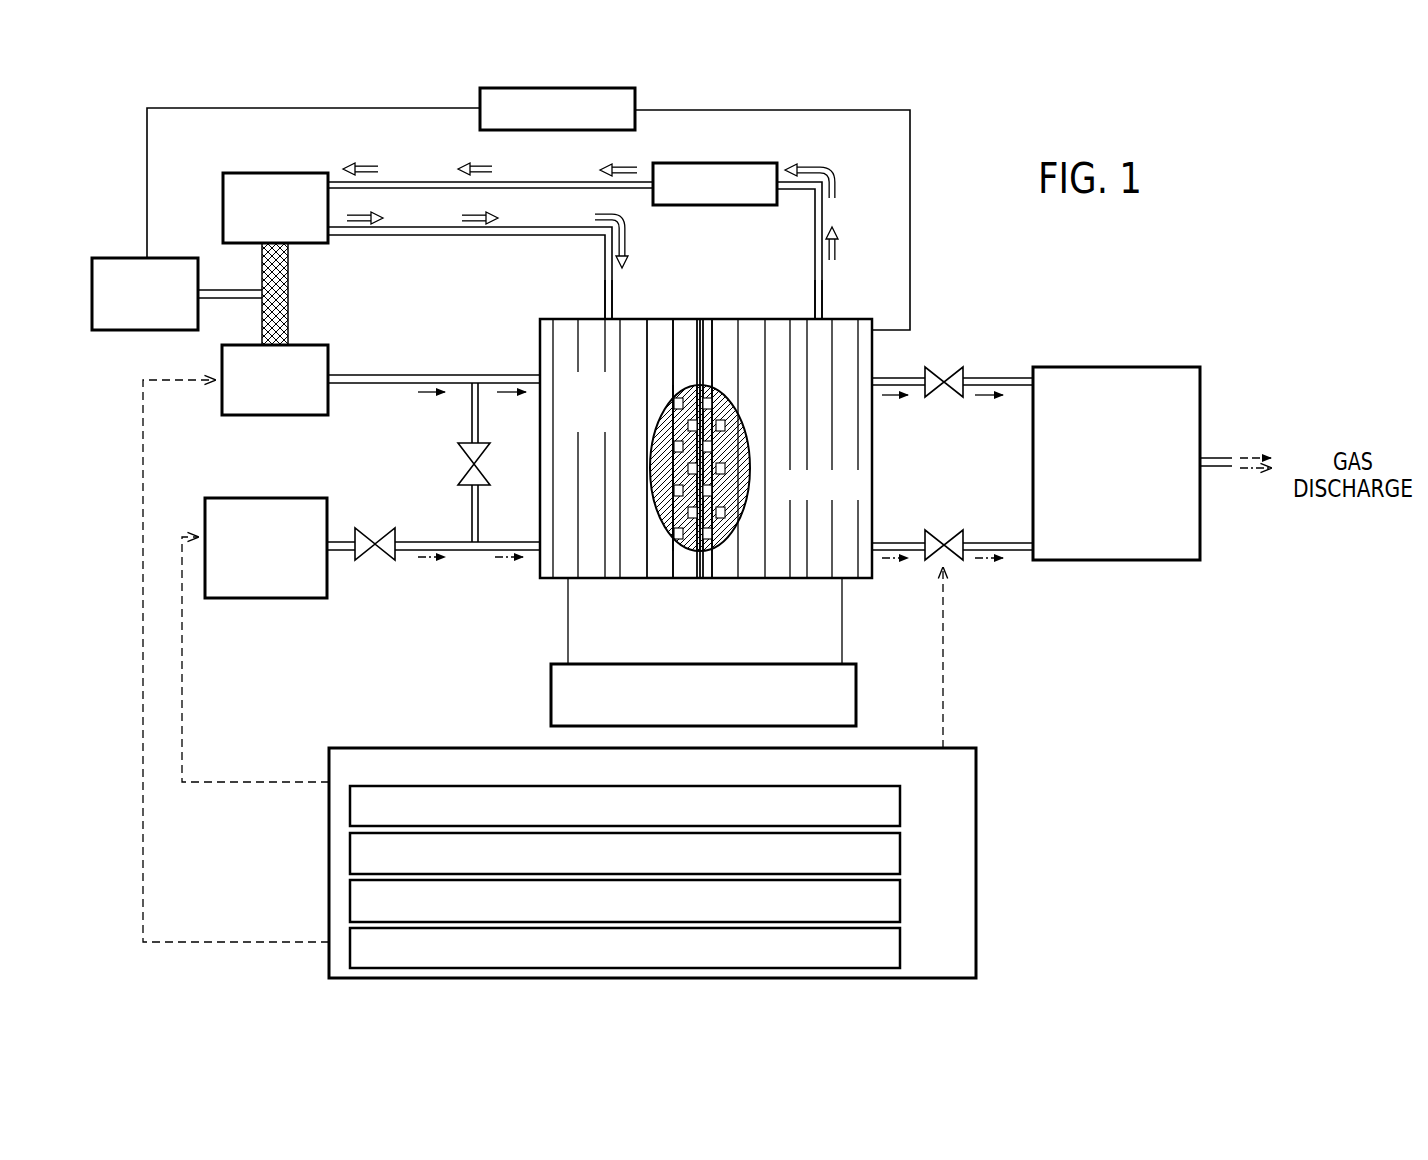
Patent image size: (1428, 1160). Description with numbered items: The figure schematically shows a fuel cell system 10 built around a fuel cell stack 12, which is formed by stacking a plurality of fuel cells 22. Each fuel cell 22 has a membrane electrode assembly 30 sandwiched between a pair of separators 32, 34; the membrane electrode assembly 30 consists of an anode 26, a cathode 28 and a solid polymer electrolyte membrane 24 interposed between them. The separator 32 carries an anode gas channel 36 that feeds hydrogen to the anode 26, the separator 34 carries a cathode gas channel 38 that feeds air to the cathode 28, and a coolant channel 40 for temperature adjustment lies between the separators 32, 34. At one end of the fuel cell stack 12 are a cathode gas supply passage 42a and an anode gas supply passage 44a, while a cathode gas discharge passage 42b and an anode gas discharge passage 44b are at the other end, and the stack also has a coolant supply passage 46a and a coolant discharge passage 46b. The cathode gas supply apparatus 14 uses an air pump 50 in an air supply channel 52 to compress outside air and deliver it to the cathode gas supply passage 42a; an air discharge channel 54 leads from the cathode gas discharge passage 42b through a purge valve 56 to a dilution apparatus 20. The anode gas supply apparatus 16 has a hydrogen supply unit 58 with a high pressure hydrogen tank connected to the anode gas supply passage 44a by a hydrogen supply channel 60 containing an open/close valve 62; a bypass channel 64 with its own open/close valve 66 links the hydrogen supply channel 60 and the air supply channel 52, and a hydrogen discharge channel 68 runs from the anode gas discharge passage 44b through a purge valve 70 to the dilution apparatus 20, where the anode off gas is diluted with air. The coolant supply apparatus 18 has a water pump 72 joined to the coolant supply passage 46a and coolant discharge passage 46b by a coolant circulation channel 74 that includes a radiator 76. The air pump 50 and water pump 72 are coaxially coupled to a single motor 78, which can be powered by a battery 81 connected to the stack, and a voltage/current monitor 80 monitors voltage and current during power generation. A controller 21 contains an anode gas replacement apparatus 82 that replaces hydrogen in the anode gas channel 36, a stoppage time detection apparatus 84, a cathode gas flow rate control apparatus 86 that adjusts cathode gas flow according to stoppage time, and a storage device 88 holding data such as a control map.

The fuel cell system 10 is at (1013, 253).
The fuel cell stack 12 is at (759, 314).
The cathode gas supply apparatus 14 is at (427, 418).
The anode gas supply apparatus 16 is at (364, 539).
The coolant supply apparatus 18 is at (580, 221).
The dilution apparatus 20 is at (1189, 366).
The controller 21 is at (586, 679).
The fuel cell 22 is at (704, 492).
The solid polymer electrolyte membrane 24 is at (701, 385).
The anode 26 is at (684, 388).
The cathode 28 is at (727, 380).
The membrane electrode assembly 30 is at (701, 582).
The separator 32 is at (681, 582).
The separator 34 is at (728, 473).
The anode gas channel 36 is at (668, 425).
The cathode gas channel 38 is at (717, 472).
The coolant channel 40 is at (653, 473).
The cathode gas supply passage 42a is at (538, 375).
The cathode gas discharge passage 42b is at (877, 374).
The anode gas supply passage 44a is at (539, 542).
The anode gas discharge passage 44b is at (877, 540).
The coolant supply passage 46a is at (600, 318).
The coolant discharge passage 46b is at (824, 318).
The air pump 50 is at (315, 343).
The air supply channel 52 is at (443, 375).
The air discharge channel 54 is at (997, 377).
The purge valve 56 is at (943, 366).
The hydrogen supply unit 58 is at (313, 498).
The hydrogen supply channel 60 is at (446, 542).
The open/close valve 62 is at (374, 528).
The bypass channel 64 is at (471, 413).
The open/close valve 66 is at (458, 465).
The hydrogen discharge channel 68 is at (997, 541).
The purge valve 70 is at (943, 529).
The water pump 72 is at (317, 245).
The coolant circulation channel 74 is at (640, 190).
The radiator 76 is at (763, 206).
The motor 78 is at (113, 256).
The voltage/current monitor 80 is at (856, 688).
The battery 81 is at (562, 131).
The anode gas replacement apparatus 82 is at (900, 807).
The stoppage time detection apparatus 84 is at (900, 854).
The cathode gas flow rate control apparatus 86 is at (900, 901).
The storage device 88 is at (900, 948).